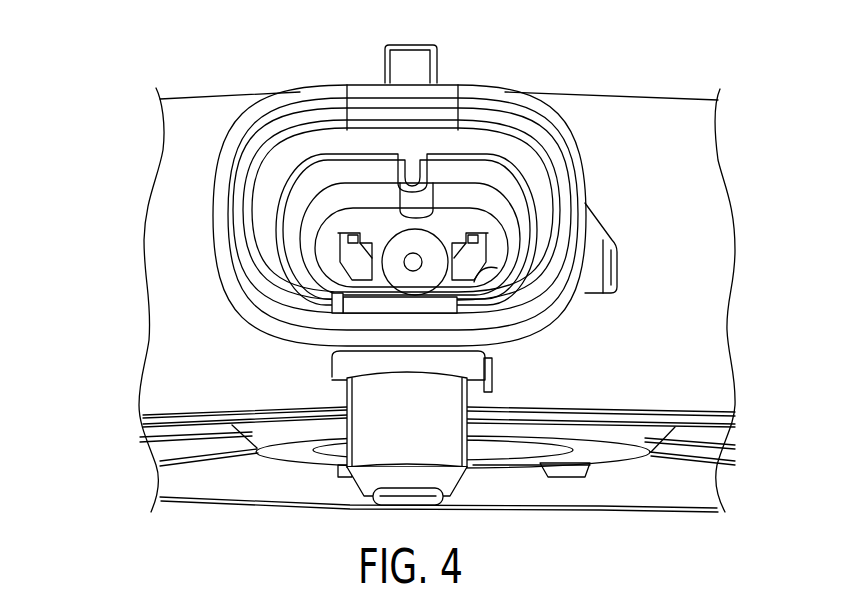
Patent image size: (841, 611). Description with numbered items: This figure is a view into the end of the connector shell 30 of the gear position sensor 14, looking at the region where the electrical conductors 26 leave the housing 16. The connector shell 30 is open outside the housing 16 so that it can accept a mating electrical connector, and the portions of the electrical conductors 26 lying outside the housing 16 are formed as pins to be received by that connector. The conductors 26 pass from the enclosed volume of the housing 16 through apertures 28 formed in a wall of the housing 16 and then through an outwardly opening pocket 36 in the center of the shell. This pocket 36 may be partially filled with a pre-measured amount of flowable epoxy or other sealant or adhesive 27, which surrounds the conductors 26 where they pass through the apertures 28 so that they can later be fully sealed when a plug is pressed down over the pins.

The gear position sensor 14 is at (407, 266).
The housing 16 is at (207, 127).
The electrical conductors 26 is at (363, 240).
The sealant or adhesive 27 is at (402, 243).
The apertures 28 is at (368, 270).
The connector shell 30 is at (545, 115).
The pocket 36 is at (497, 250).